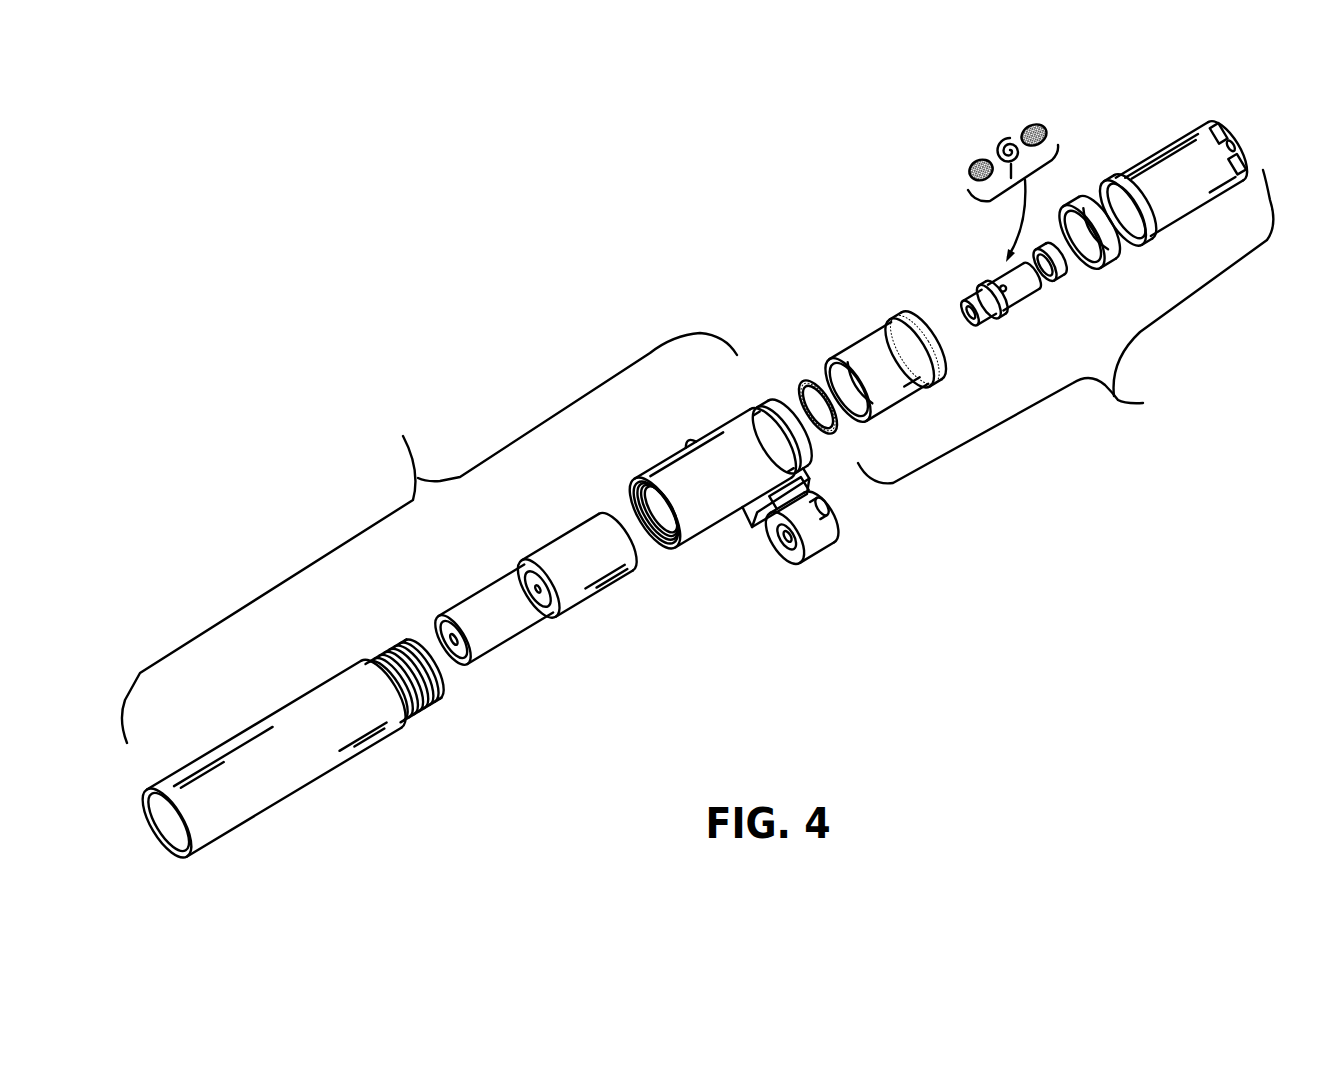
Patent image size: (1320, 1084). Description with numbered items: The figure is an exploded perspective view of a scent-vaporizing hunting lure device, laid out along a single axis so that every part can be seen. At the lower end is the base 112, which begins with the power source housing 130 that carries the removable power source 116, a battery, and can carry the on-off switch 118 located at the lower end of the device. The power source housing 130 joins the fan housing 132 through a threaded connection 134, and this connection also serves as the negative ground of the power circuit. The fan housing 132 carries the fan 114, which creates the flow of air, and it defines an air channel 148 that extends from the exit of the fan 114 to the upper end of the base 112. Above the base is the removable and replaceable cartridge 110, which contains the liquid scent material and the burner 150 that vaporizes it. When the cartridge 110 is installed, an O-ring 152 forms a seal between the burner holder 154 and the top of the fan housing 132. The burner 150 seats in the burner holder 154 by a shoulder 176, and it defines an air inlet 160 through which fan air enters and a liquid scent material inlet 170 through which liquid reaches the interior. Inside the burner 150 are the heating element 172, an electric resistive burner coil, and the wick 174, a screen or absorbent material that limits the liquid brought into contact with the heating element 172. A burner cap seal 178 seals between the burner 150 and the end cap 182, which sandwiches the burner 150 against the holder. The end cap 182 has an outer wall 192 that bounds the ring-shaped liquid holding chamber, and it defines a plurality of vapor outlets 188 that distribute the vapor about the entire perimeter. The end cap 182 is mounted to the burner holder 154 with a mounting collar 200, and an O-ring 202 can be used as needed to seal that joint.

The cartridge 110 is at (1065, 326).
The base 112 is at (429, 538).
The fan 114 is at (817, 547).
The power source 116 is at (567, 587).
The on-off switch 118 is at (168, 838).
The power source housing 130 is at (300, 765).
The fan housing 132 is at (713, 447).
The threaded connection 134 is at (423, 703).
The air channel 148 is at (797, 478).
The burner 150 is at (985, 265).
The O-ring 152 is at (805, 387).
The burner holder 154 is at (880, 338).
The air inlet 160 is at (970, 292).
The liquid scent material inlet 170 is at (1010, 283).
The heating element 172 is at (990, 140).
The wick 174 is at (1035, 123).
The shoulder 176 is at (1003, 317).
The burner cap seal 178 is at (1052, 268).
The end cap 182 is at (1160, 167).
The vapor outlets 188 is at (1215, 126).
The outer wall 192 is at (1167, 205).
The mounting collar 200 is at (1118, 250).
The O-ring 202 is at (901, 323).